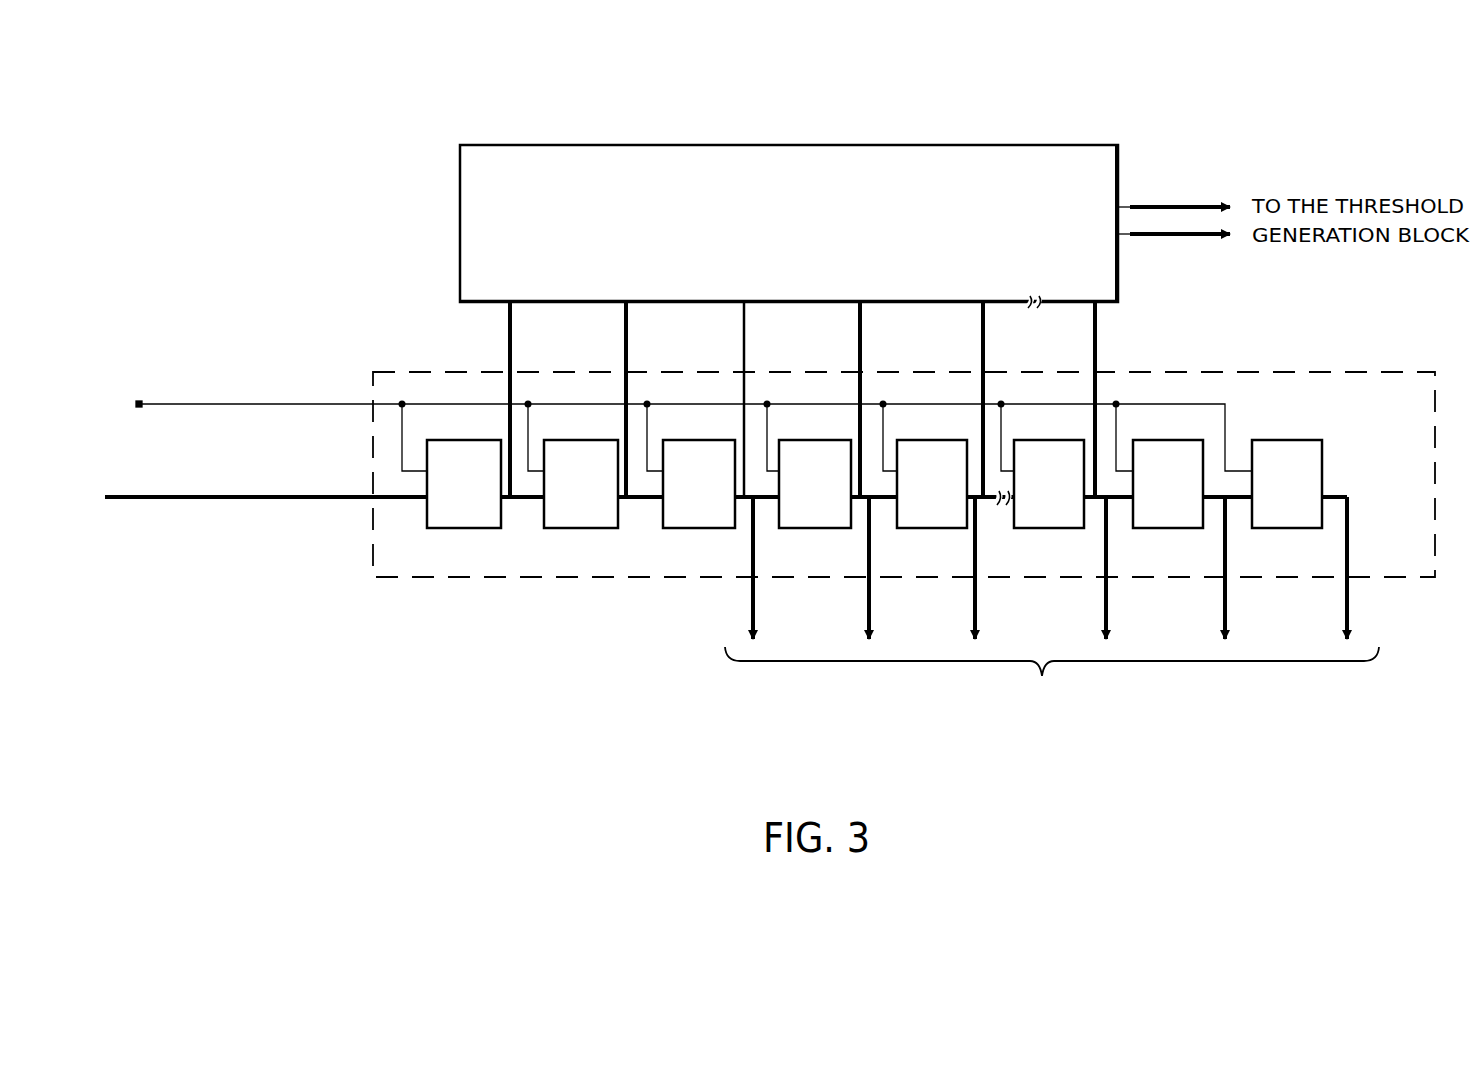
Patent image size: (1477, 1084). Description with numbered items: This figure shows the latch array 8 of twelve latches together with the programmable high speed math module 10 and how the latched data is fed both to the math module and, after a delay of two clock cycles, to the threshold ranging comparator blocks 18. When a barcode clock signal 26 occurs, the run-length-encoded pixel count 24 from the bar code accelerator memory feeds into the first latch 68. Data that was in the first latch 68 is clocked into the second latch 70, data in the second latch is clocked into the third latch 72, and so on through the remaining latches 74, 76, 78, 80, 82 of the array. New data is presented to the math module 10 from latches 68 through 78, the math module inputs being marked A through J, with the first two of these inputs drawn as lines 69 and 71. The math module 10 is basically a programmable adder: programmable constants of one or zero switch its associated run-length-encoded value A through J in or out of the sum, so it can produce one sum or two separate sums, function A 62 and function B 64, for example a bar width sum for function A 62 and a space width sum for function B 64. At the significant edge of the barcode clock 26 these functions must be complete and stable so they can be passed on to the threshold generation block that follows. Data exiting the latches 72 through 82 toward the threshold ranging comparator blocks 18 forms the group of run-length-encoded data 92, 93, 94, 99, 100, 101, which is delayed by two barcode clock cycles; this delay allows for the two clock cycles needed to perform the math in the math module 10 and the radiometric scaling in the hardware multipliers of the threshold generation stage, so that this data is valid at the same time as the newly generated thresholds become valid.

The programmable high speed math module 10 is at (1041, 144).
The function A 62 is at (1171, 207).
The function B 64 is at (1186, 237).
The latch array 8 is at (1380, 372).
The barcode clock signal 26 is at (340, 403).
The run-length-encoded pixel count 24 is at (256, 501).
The first latch 68 is at (463, 440).
The second latch 70 is at (600, 440).
The third latch 72 is at (715, 440).
The latch 74 is at (830, 440).
The latch 76 is at (950, 440).
The latch 78 is at (1061, 440).
The latch 80 is at (1188, 440).
The latch 82 is at (1305, 440).
The signal line A 69 is at (510, 333).
The signal line B 71 is at (626, 333).
The run-length-encoded data 92 is at (744, 333).
The run-length-encoded data 93 is at (860, 333).
The run-length-encoded data 94 is at (983, 333).
The run-length-encoded data 99 is at (1095, 333).
The run-length-encoded data 100 is at (1225, 625).
The run-length-encoded data 101 is at (1347, 613).
The threshold ranging comparator blocks 18 is at (1052, 688).